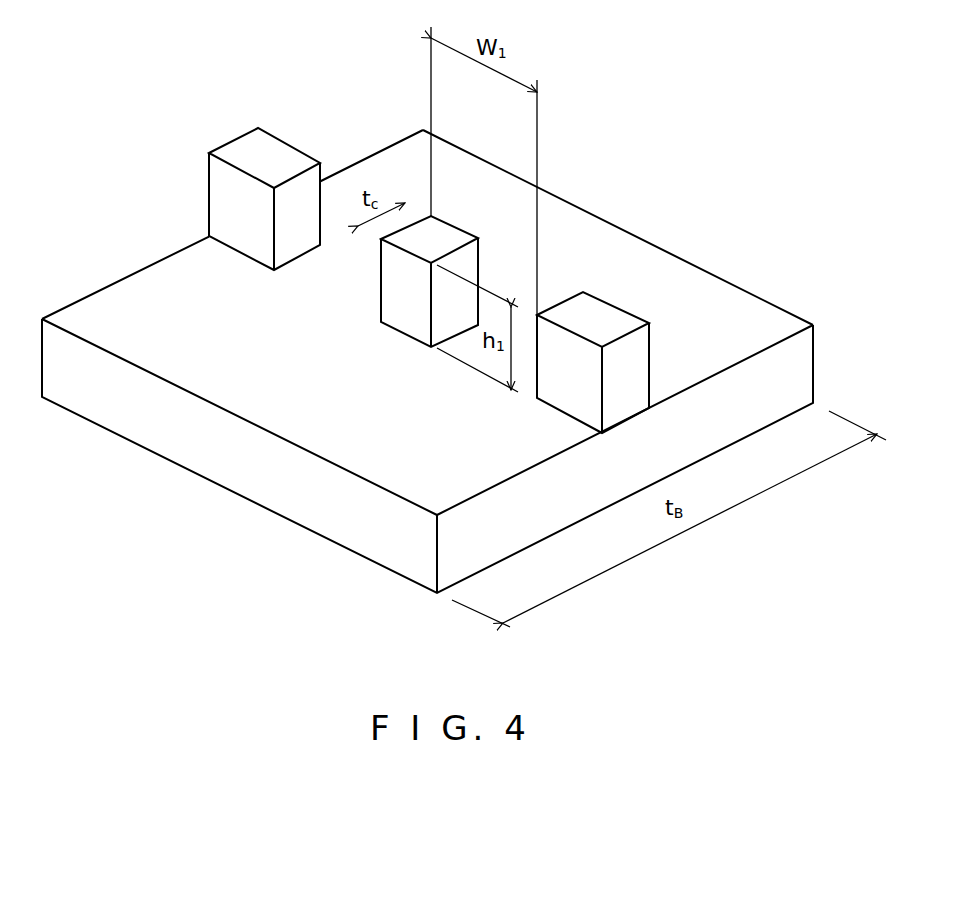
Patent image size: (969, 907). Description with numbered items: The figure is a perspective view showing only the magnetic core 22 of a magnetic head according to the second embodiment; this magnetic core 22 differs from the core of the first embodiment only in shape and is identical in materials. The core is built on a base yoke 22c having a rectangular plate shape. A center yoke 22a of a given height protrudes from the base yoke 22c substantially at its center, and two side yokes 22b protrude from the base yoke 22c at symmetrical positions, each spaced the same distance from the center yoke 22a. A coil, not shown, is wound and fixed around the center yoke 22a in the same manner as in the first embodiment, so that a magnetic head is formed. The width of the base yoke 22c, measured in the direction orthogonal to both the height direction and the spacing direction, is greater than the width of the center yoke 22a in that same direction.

The magnetic core 22 is at (427, 302).
The center yoke 22a is at (453, 238).
The side yokes 22b is at (263, 147).
The base yoke 22c is at (120, 300).